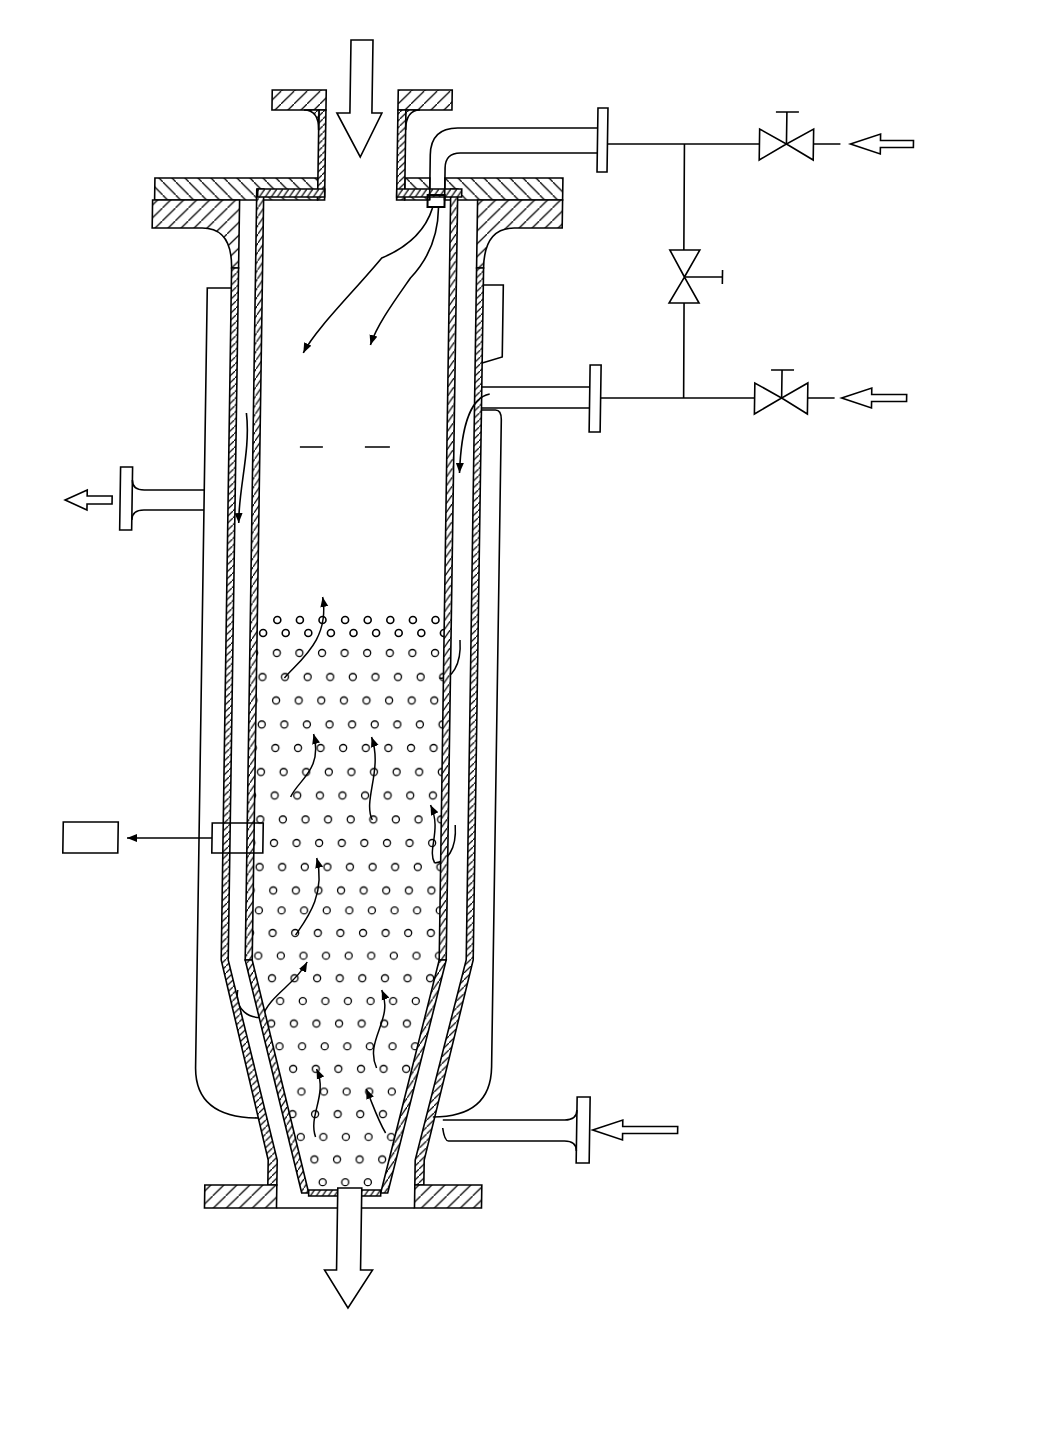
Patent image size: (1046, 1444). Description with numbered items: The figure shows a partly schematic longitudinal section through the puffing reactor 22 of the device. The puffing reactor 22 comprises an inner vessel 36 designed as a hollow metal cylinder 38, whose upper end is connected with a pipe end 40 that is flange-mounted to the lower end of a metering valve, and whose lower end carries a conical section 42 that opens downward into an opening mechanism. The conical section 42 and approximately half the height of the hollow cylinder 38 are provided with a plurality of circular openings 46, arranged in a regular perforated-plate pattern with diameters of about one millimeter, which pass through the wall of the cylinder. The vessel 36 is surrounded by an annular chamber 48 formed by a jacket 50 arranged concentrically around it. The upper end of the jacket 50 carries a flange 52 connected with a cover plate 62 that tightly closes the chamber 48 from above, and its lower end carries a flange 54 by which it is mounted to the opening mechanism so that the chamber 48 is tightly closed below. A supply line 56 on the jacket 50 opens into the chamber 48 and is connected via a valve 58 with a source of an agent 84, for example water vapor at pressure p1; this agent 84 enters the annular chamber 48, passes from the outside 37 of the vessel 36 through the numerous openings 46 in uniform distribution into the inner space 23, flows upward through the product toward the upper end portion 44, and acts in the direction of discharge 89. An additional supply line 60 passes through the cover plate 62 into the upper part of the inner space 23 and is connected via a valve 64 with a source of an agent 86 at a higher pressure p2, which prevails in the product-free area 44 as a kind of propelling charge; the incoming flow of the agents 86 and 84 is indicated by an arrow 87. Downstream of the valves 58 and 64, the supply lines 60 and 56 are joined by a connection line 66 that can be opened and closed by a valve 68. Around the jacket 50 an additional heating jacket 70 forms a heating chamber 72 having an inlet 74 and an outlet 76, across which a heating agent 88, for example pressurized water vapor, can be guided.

The puffing reactor 22 is at (126, 153).
The inner space 23 is at (345, 410).
The inner vessel 36 is at (252, 590).
The outside 37 is at (255, 738).
The hollow metal cylinder 38 is at (249, 351).
The pipe end 40 is at (425, 85).
The conical section 42 is at (297, 1122).
The upper end portion 44 is at (398, 515).
The circular openings 46 is at (432, 797).
The chamber 48 is at (457, 583).
The jacket 50 is at (473, 636).
The flange 52 is at (146, 213).
The flange 54 is at (215, 1190).
The supply line 56 is at (536, 392).
The valve 58 is at (797, 412).
The additional supply line 60 is at (521, 142).
The cover plate 62 is at (188, 180).
The valve 64 is at (798, 132).
The connection line 66 is at (678, 206).
The valve 68 is at (690, 295).
The heating jacket 70 is at (498, 942).
The heating chamber 72 is at (478, 1008).
The inlet 74 is at (547, 1141).
The outlet 76 is at (168, 500).
The agent 84 is at (870, 395).
The agent 86 is at (878, 142).
The feed flow 87 is at (350, 65).
The heating agent 88 is at (652, 1130).
The direction of discharge 89 is at (359, 1248).